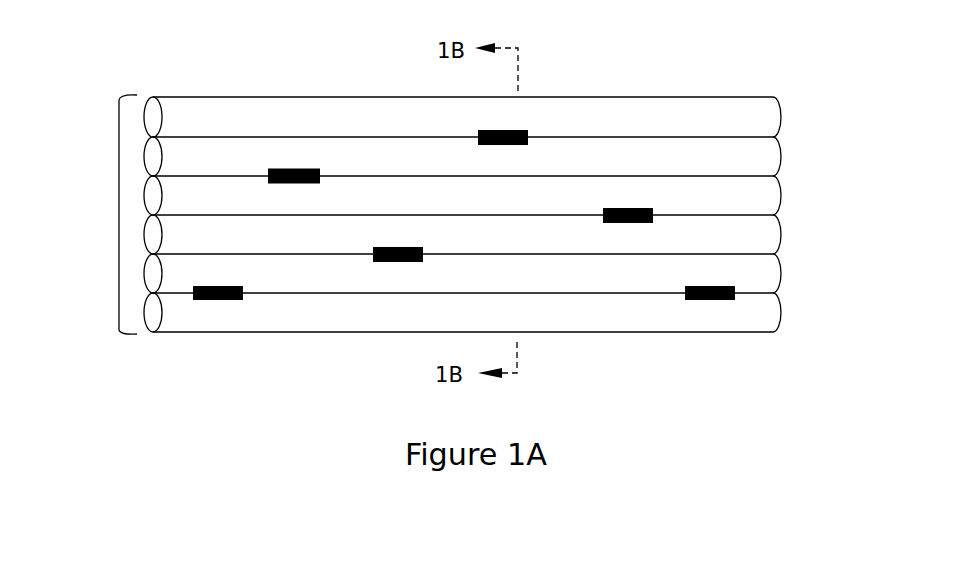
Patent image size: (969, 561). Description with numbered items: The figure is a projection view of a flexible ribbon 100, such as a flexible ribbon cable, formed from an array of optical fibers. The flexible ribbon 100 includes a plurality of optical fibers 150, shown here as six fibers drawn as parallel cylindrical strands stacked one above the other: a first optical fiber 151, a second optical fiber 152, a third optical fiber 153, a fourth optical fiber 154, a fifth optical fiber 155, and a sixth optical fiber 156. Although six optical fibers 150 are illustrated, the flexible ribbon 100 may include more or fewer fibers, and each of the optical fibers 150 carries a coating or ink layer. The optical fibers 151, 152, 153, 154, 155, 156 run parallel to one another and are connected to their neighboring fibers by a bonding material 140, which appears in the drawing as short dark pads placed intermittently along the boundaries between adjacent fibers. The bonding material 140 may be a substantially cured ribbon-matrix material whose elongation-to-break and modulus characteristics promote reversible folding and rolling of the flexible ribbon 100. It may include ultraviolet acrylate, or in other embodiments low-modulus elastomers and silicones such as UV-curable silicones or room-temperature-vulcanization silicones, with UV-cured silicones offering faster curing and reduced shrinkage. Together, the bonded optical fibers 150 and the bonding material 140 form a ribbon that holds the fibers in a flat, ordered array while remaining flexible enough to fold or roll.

The flexible ribbon 100 is at (690, 82).
The bonding material 140 is at (628, 208).
The optical fibers 150 is at (119, 214).
The first optical fiber 151 is at (360, 124).
The second optical fiber 152 is at (387, 169).
The third optical fiber 153 is at (387, 212).
The fourth optical fiber 154 is at (315, 249).
The fifth optical fiber 155 is at (387, 287).
The sixth optical fiber 156 is at (387, 327).